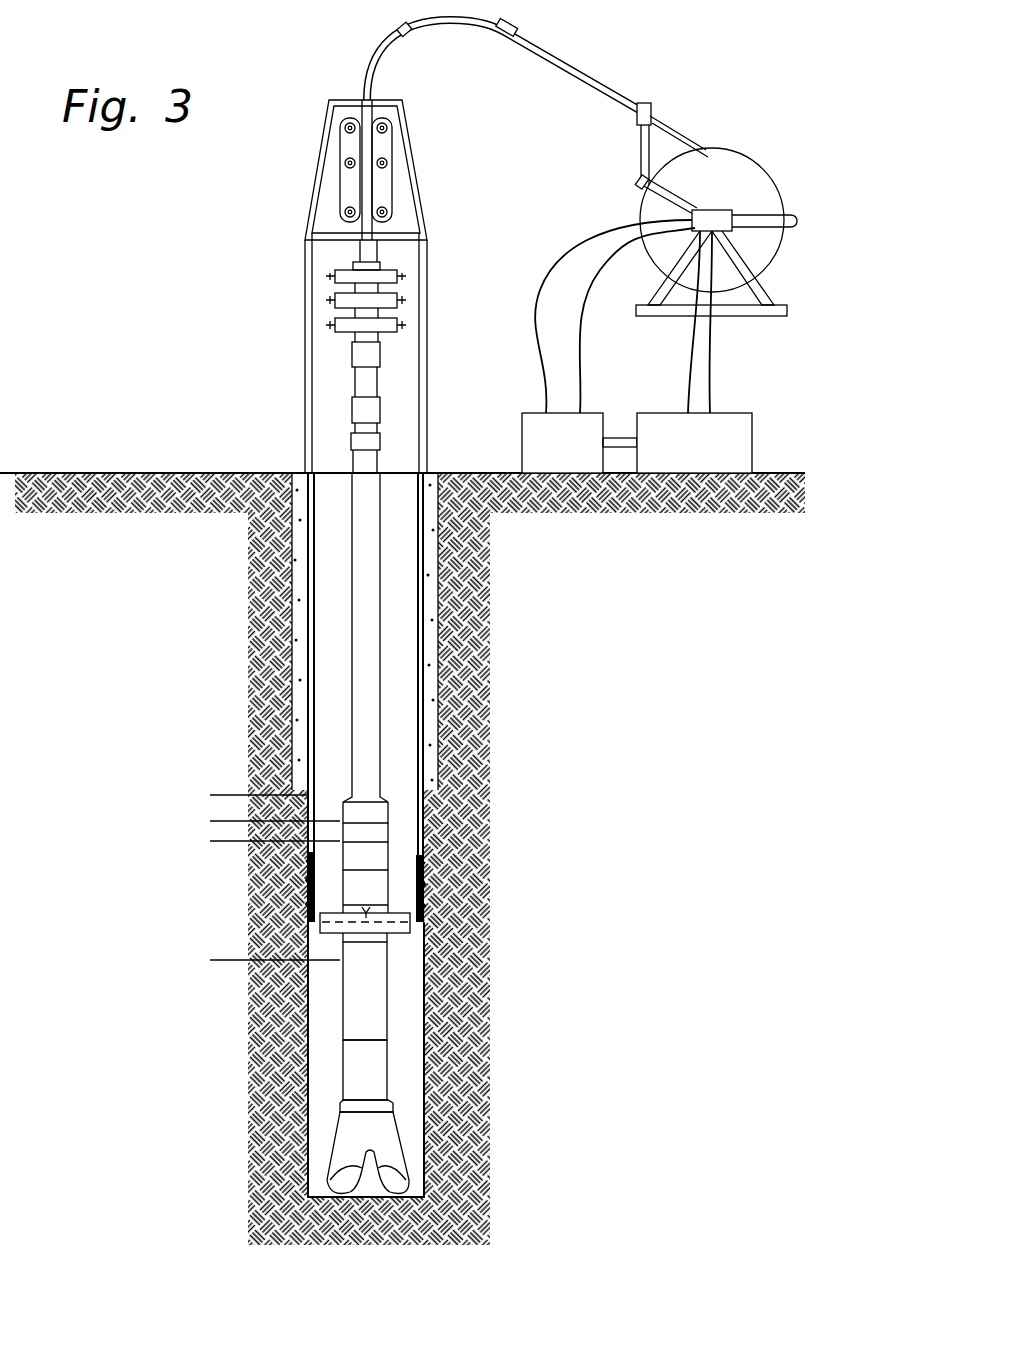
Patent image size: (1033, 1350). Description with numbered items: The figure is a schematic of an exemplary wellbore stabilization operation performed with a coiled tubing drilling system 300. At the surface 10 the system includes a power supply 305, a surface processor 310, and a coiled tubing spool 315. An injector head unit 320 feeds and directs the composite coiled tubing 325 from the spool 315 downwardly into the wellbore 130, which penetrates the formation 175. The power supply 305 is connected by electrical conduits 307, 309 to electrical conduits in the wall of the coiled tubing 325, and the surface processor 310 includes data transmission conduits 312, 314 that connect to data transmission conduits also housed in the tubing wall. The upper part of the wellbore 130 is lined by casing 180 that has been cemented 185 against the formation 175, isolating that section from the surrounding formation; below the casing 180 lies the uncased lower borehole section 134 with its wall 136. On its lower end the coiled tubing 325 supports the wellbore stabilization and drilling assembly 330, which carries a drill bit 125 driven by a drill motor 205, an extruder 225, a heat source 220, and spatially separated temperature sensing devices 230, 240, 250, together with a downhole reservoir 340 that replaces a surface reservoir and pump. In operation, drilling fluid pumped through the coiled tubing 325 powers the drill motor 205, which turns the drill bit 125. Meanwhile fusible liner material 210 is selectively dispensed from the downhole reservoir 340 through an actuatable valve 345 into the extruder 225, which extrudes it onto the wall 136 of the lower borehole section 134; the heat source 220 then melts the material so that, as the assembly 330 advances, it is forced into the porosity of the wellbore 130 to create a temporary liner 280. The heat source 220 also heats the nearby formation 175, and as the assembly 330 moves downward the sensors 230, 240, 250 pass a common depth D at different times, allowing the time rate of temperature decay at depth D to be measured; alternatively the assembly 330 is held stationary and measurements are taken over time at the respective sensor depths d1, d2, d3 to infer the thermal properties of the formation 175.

The coiled tubing drilling system 300 is at (712, 44).
The coiled tubing 325 is at (557, 62).
The injector head unit 320 is at (392, 152).
The coiled tubing spool 315 is at (760, 166).
The electrical conduit 307 is at (553, 260).
The electrical conduit 309 is at (580, 335).
The data transmission conduit 312 is at (688, 365).
The data transmission conduit 314 is at (716, 365).
The power supply 305 is at (522, 436).
The surface processor 310 is at (752, 437).
The surface 10 is at (75, 473).
The casing 180 is at (423, 658).
The cement 185 is at (432, 712).
The wellbore 130 is at (335, 690).
The wall of the lower borehole section 136 is at (425, 1097).
The lower borehole section 134 is at (408, 1130).
The formation 175 is at (646, 848).
The wellbore stabilization and drilling assembly 330 is at (388, 798).
The temperature sensing device 250 is at (380, 812).
The temporary liner 280 is at (380, 833).
The temperature sensing device 240 is at (380, 857).
The heat source 220 is at (380, 888).
The downhole reservoir 340 is at (390, 910).
The actuatable valve 345 is at (413, 929).
The fusible liner material 210 is at (312, 918).
The extruder 225 is at (366, 933).
The temperature sensing device 230 is at (377, 957).
The drill motor 205 is at (364, 1078).
The drill bit 125 is at (342, 1153).
The depth D is at (214, 795).
The depth d3 is at (212, 821).
The depth d2 is at (212, 841).
The depth d1 is at (212, 960).